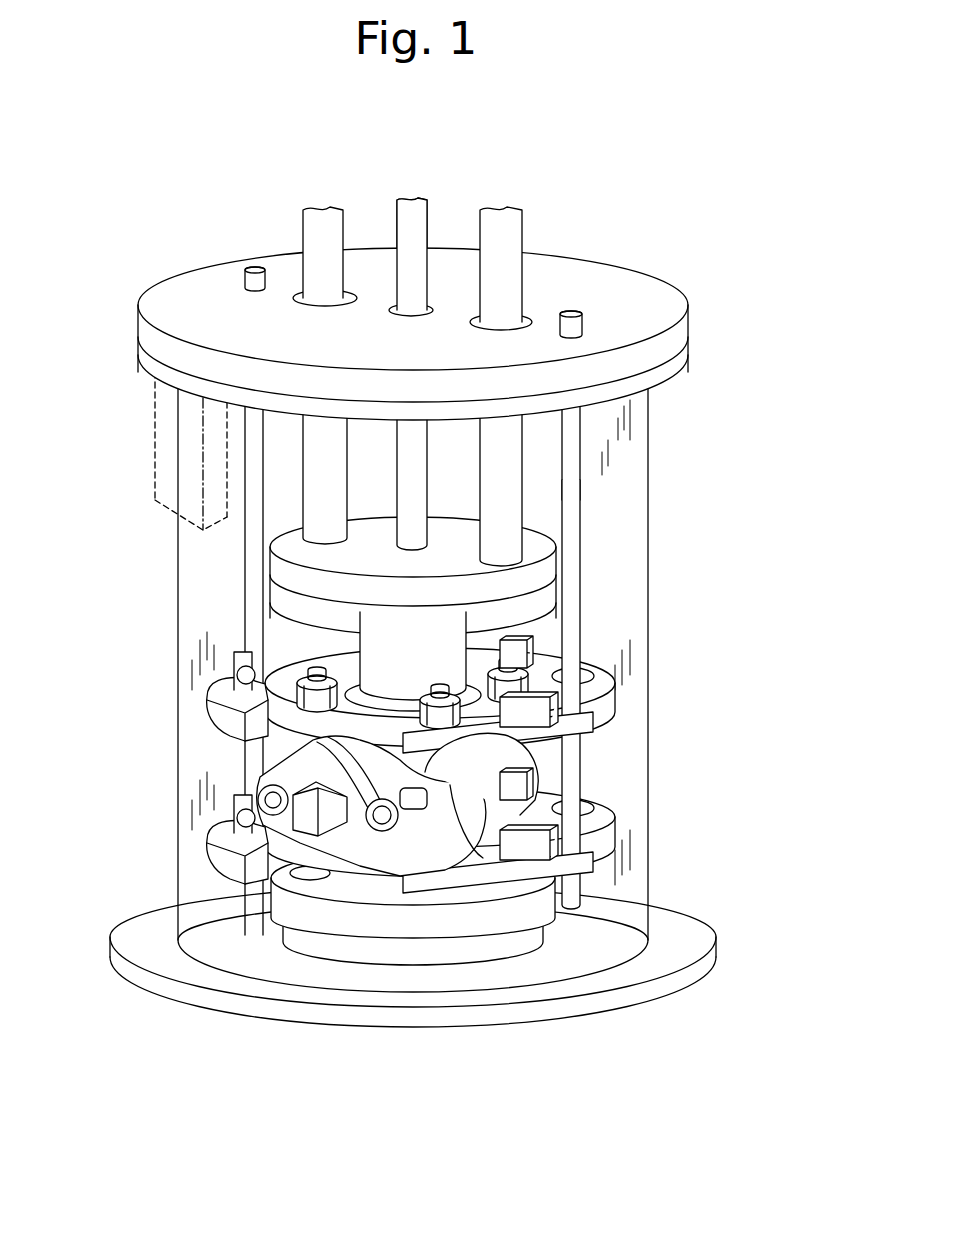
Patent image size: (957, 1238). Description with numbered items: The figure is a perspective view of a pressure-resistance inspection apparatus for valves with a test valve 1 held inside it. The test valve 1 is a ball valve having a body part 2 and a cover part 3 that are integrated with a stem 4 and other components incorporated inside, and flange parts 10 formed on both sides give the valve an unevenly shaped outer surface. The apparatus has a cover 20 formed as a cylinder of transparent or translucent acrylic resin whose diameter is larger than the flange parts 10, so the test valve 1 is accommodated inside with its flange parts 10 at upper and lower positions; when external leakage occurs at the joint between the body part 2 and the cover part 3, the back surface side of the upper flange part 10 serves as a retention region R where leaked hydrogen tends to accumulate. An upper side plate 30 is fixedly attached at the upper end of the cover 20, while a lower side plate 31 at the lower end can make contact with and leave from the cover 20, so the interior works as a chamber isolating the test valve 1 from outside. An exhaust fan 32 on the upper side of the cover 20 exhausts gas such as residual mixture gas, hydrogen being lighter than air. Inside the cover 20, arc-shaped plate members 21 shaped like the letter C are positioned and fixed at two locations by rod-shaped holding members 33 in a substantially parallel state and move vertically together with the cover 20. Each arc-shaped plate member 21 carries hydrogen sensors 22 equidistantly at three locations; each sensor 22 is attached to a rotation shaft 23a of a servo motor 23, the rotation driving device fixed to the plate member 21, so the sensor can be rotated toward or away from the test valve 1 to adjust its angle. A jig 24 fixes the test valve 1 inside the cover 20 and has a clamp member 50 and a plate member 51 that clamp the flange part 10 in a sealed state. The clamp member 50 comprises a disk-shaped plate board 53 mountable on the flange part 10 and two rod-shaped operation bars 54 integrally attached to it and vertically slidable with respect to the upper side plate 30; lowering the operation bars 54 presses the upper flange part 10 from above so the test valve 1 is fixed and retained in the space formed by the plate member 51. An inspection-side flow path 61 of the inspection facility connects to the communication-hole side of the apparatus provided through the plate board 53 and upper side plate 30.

The test valve 1 is at (422, 920).
The body part 2 is at (590, 793).
The cover part 3 is at (540, 688).
The stem 4 is at (223, 847).
The flange parts 10 is at (300, 608).
The cover 20 is at (610, 528).
The arc-shaped plate members 21 is at (238, 752).
The sensors 22 is at (232, 706).
The rotation driving devices 23 is at (240, 660).
The rotation shaft 23a is at (250, 808).
The jig 24 is at (547, 572).
The upper side plate 30 is at (640, 296).
The lower side plate 31 is at (200, 1000).
The exhaust fan 32 is at (172, 452).
The rod-shaped holding members 33 is at (570, 422).
The clamp member 50 is at (463, 547).
The plate member 51 is at (357, 945).
The plate board 53 is at (377, 545).
The operation bars 54 is at (320, 236).
The inspection-side flow path 61 is at (408, 212).
The retention region R is at (543, 635).